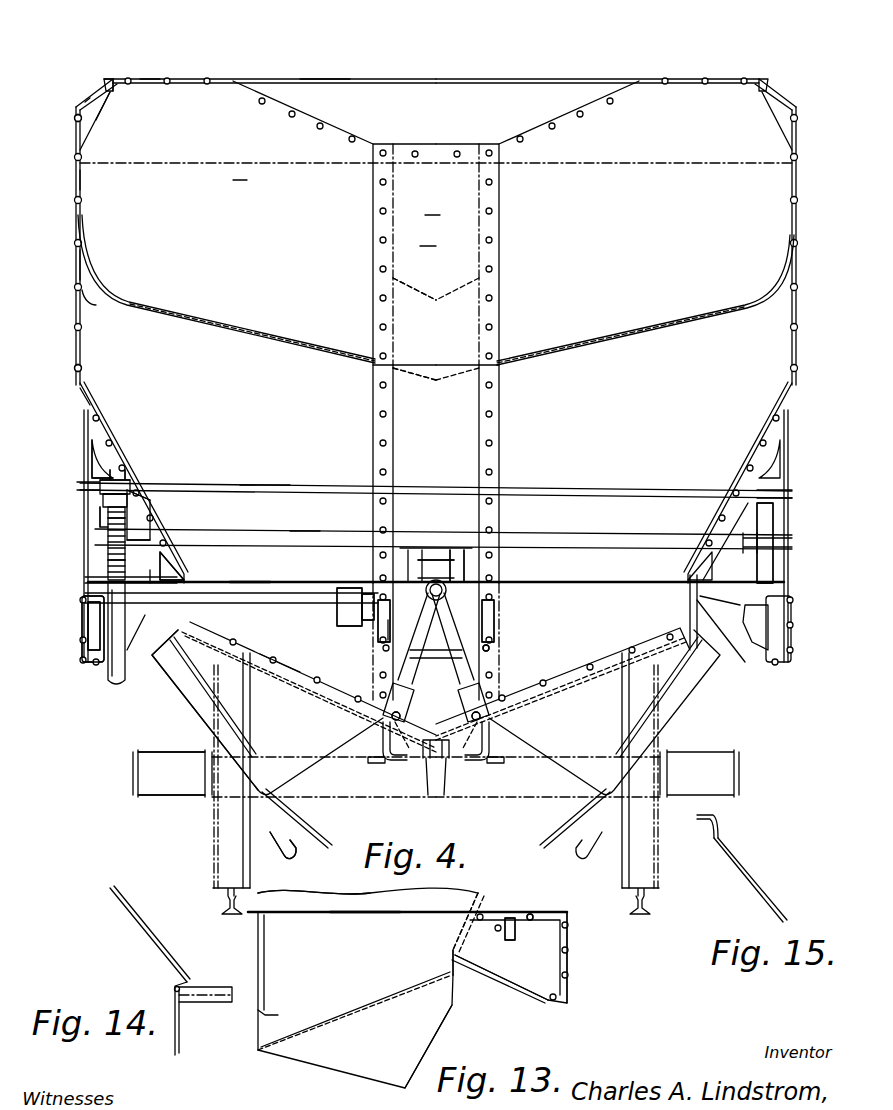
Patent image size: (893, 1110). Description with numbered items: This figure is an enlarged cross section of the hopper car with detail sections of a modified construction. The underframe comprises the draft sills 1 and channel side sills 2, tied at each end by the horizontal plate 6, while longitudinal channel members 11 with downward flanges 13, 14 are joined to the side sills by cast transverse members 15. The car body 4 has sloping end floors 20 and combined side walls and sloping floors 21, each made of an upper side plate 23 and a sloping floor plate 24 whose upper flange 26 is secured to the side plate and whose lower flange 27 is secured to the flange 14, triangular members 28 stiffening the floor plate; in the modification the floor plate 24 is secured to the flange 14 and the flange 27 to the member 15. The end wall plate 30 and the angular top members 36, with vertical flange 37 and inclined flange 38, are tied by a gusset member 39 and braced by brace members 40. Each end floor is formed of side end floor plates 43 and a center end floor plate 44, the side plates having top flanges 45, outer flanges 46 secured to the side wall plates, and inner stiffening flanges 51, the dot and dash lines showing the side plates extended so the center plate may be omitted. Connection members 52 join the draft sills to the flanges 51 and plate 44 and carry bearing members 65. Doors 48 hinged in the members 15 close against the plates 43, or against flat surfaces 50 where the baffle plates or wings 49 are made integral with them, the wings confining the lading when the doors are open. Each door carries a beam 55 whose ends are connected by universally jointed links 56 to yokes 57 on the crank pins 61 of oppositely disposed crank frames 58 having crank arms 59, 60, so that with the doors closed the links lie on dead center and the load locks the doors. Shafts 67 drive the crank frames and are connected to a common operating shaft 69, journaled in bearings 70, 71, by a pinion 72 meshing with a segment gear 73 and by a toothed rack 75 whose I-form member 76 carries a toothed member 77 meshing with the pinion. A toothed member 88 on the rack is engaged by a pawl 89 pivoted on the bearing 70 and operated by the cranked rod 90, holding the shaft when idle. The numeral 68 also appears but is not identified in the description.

In FIG. 4, the draft sill 1 is at (386, 625).
In FIG. 13, the draft sill 1 is at (272, 1012).
In FIG. 4, the side sill 2 is at (82, 651).
In FIG. 13, the side sill 2 is at (562, 975).
In FIG. 4, the car body 4 is at (432, 204).
In FIG. 4, the horizontal plate 6 is at (250, 581).
In FIG. 13, the horizontal plate 6 is at (368, 914).
In FIG. 4, the longitudinally extending member 11 is at (152, 578).
In FIG. 13, the longitudinally extending member 11 is at (515, 915).
In FIG. 13, the flange 13 is at (541, 915).
In FIG. 13, the flange 14 is at (456, 936).
In FIG. 4, the transversely extending member 15 is at (92, 617).
In FIG. 13, the transversely extending member 15 is at (522, 977).
In FIG. 4, the sloping end floor 20 is at (427, 235).
In FIG. 4, the combined side wall and sloping floor 21 is at (75, 265).
In FIG. 4, the upper side plate 23 is at (75, 302).
In FIG. 4, the sloping floor plate 24 is at (78, 392).
In FIG. 13, the sloping floor plate 24 is at (483, 910).
In FIG. 4, the upper flange 26 is at (82, 373).
In FIG. 4, the lower flange 27 is at (186, 576).
In FIG. 13, the lower flange 27 is at (452, 962).
In FIG. 4, the triangular stiffening member 28 is at (90, 432).
In FIG. 4, the end wall plate 30 is at (430, 108).
In FIG. 4, the top member 36 is at (82, 102).
In FIG. 4, the vertical flange 37 is at (73, 120).
In FIG. 4, the inclined flange 38 is at (110, 80).
In FIG. 4, the gusset member 39 is at (146, 80).
In FIG. 4, the brace member 40 is at (96, 106).
In FIG. 4, the side end floor plate 43 is at (430, 195).
In FIG. 13, the side end floor plate 43 is at (314, 920).
In FIG. 14, the side end floor plate 43 is at (146, 934).
In FIG. 15, the side end floor plate 43 is at (757, 884).
In FIG. 4, the center end floor plate 44 is at (415, 278).
In FIG. 15, the top flange 45 is at (716, 814).
In FIG. 4, the flange 46 is at (82, 180).
In FIG. 4, the door 48 is at (208, 786).
In FIG. 14, the door 48 is at (216, 988).
In FIG. 4, the baffle plate or wing 49 is at (218, 735).
In FIG. 13, the baffle plate or wing 49 is at (430, 1045).
In FIG. 14, the baffle plate or wing 49 is at (176, 1048).
In FIG. 14, the flat surface 50 is at (178, 992).
In FIG. 4, the stiffening flange 51 is at (340, 400).
In FIG. 4, the connection member 52 is at (489, 648).
In FIG. 4, the beam 55 is at (370, 762).
In FIG. 4, the universally jointed link 56 is at (436, 718).
In FIG. 4, the yoke 57 is at (428, 555).
In FIG. 4, the crank frame 58 is at (456, 575).
In FIG. 4, the crank arm 59 is at (486, 615).
In FIG. 4, the crank arm 60 is at (376, 617).
In FIG. 4, the crank pin 61 is at (470, 570).
In FIG. 4, the bearing member 65 is at (345, 592).
In FIG. 4, the shaft 67 is at (280, 622).
In FIG. 4, the coupling 68 is at (340, 600).
In FIG. 4, the operating shaft 69 is at (305, 540).
In FIG. 4, the bearing 70 is at (106, 514).
In FIG. 4, the bearing 71 is at (775, 526).
In FIG. 4, the pinion 72 is at (133, 522).
In FIG. 4, the segment gear 73 is at (108, 561).
In FIG. 4, the toothed rack 75 is at (100, 488).
In FIG. 4, the I-form member 76 is at (101, 508).
In FIG. 4, the toothed member 77 is at (110, 522).
In FIG. 4, the toothed member 88 is at (140, 492).
In FIG. 4, the pawl 89 is at (118, 480).
In FIG. 4, the rod 90 is at (263, 485).